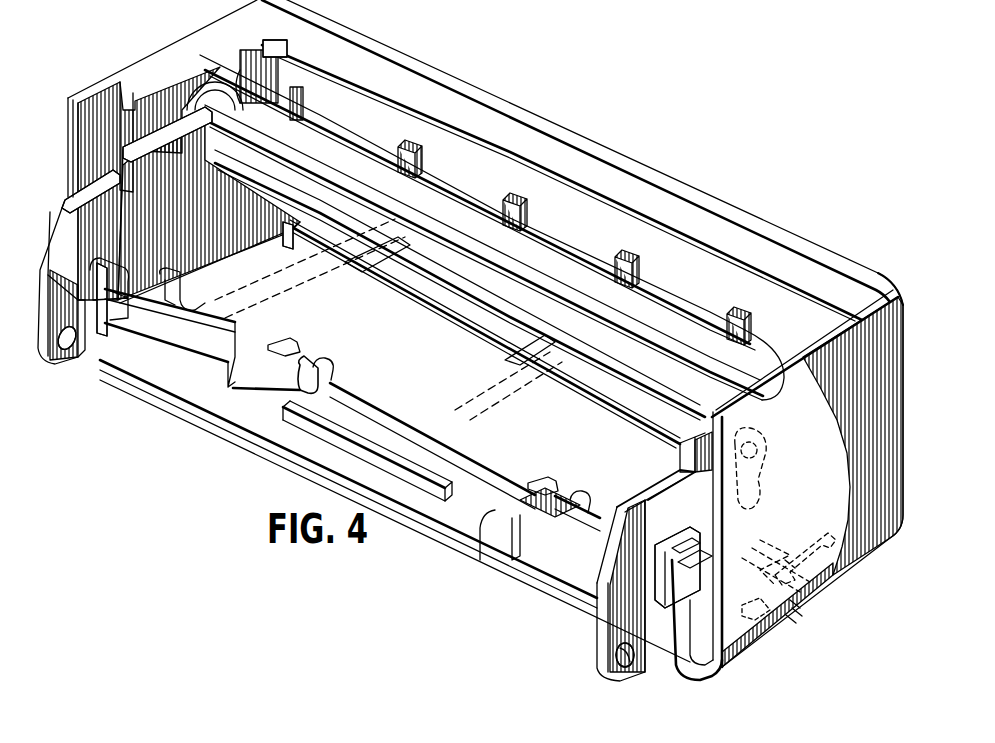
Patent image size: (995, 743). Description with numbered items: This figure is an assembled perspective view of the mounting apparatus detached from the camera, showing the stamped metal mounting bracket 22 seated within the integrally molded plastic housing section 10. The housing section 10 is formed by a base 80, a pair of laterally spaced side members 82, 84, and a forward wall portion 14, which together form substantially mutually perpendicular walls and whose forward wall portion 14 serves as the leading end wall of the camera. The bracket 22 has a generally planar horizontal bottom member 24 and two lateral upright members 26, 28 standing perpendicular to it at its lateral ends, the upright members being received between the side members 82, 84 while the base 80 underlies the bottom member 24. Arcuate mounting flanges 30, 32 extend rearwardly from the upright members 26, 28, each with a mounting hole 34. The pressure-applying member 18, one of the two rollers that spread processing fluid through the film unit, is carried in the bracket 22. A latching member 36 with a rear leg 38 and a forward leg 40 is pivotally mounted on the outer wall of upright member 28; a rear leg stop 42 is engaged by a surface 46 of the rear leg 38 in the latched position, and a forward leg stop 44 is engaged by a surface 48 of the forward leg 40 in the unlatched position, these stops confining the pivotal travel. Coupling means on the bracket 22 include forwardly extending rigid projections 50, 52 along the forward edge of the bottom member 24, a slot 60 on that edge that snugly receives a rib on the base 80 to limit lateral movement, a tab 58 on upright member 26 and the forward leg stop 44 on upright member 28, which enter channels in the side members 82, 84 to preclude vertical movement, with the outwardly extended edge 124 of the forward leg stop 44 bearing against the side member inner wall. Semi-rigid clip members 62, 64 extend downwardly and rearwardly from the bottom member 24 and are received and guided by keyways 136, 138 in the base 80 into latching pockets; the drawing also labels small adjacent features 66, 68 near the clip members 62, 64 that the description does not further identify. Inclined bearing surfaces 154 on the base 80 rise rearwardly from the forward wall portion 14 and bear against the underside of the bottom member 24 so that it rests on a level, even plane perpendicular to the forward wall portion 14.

The housing section 10 is at (852, 548).
The forward wall portion 14 is at (556, 130).
The pressure-applying member 18 is at (336, 205).
The mounting bracket 22 is at (268, 68).
The bottom member 24 is at (516, 452).
The lateral upright member 26 is at (192, 217).
The lateral upright member 28 is at (670, 472).
The arcuate mounting flange 30 is at (44, 302).
The arcuate mounting flange 32 is at (620, 620).
The mounting hole 34 is at (60, 356).
The latching member 36 is at (740, 462).
The rear leg 38 is at (672, 560).
The forward leg 40 is at (812, 525).
The rear leg stop 42 is at (688, 560).
The forward leg stop 44 is at (690, 620).
The surface of rear leg 46 is at (656, 596).
The surface of forward leg 48 is at (790, 590).
The rigid projection 50 is at (345, 263).
The rigid projection 52 is at (516, 354).
The tab 58 is at (100, 340).
The slot 60 is at (290, 247).
The clip member 62 is at (310, 385).
The clip member 64 is at (530, 500).
The guide tab 66 is at (290, 352).
The guide hook 68 is at (333, 372).
The base 80 is at (505, 555).
The side member 82 is at (95, 92).
The side member 84 is at (900, 298).
The outwardly extended edge 124 is at (758, 616).
The keyway 136 is at (270, 406).
The keyway 138 is at (534, 548).
The inclined bearing surface 154 is at (225, 358).